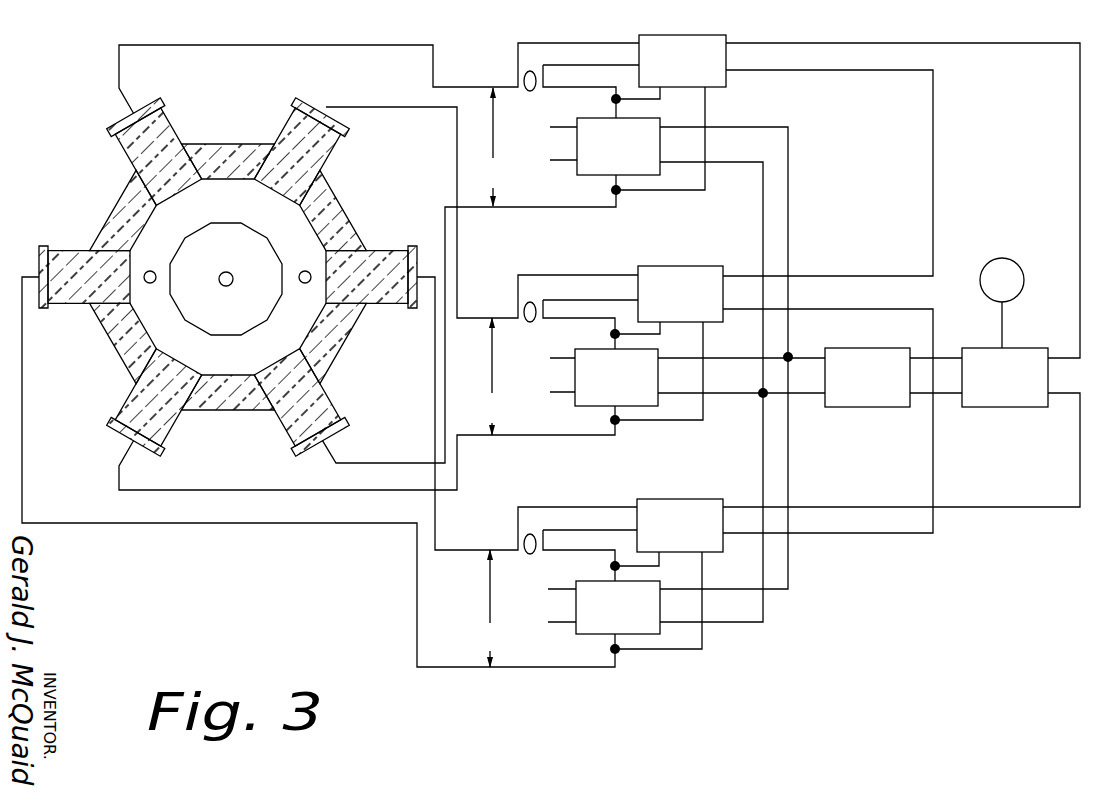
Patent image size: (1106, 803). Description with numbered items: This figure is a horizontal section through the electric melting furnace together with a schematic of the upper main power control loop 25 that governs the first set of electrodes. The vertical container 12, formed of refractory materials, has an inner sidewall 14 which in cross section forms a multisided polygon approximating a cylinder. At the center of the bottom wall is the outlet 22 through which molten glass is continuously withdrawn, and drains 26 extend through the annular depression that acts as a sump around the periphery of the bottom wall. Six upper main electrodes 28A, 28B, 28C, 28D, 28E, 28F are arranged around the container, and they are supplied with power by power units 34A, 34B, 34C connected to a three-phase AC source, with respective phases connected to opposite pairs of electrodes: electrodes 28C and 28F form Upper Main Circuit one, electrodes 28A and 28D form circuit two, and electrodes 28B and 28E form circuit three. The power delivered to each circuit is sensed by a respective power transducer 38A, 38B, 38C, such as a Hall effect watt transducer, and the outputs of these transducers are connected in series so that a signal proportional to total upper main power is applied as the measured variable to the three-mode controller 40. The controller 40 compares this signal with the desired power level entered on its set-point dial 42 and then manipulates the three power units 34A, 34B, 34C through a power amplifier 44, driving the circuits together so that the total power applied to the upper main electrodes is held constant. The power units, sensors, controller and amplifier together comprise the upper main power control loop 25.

The vertical container 12 is at (347, 216).
The inner sidewall 14 is at (305, 223).
The outlet 22 is at (225, 272).
The upper main power control loop 25 is at (897, 717).
The drains 26 is at (156, 277).
The upper main electrode 28A is at (323, 167).
The upper main electrode 28B is at (384, 306).
The upper main electrode 28C is at (280, 422).
The upper main electrode 28D is at (127, 394).
The upper main electrode 28E is at (72, 250).
The upper main electrode 28F is at (176, 135).
The power unit 34A is at (618, 146).
The power unit 34B is at (616, 377).
The power unit 34C is at (618, 607).
The power transducer 38A is at (682, 61).
The power transducer 38B is at (680, 294).
The power transducer 38C is at (680, 525).
The three-mode controller 40 is at (1005, 377).
The set-point dial 42 is at (1002, 303).
The power amplifier 44 is at (867, 377).